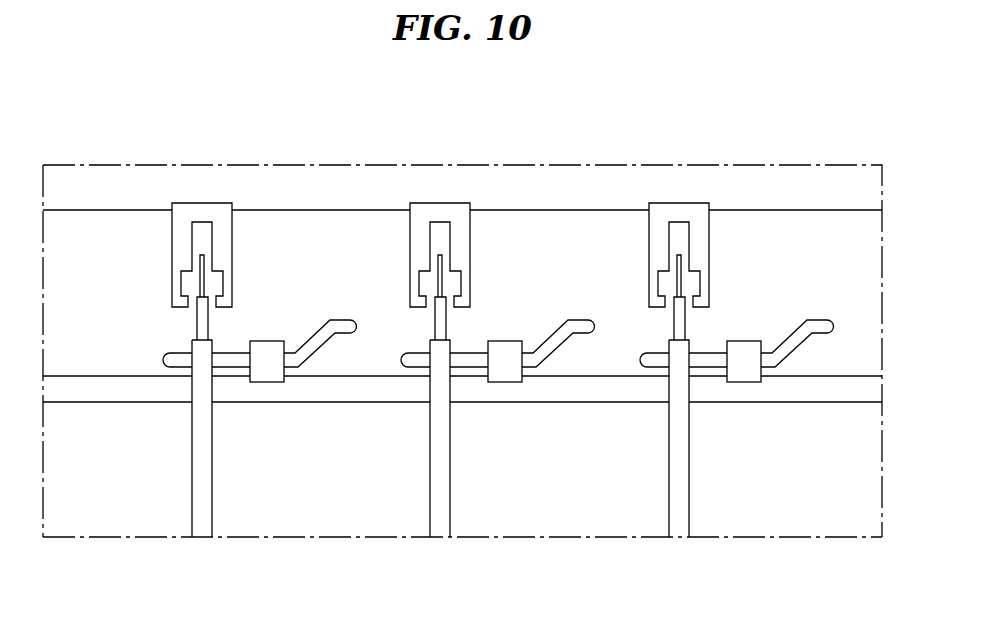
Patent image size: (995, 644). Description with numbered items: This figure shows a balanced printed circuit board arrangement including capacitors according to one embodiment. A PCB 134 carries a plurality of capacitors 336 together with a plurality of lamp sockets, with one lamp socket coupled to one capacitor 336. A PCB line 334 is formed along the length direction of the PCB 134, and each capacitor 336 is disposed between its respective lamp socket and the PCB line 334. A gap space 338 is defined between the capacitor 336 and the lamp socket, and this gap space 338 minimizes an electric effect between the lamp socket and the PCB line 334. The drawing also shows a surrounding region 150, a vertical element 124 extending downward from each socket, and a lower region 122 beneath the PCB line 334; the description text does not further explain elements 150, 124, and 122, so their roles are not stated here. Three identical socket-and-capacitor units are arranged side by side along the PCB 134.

The light source module housing region 150 is at (455, 173).
The PCB 134 is at (301, 230).
The guide rod 124 is at (202, 500).
The base substrate 122 is at (293, 513).
The PCB line 334 is at (557, 392).
The capacitor 336 is at (267, 382).
The gap space 338 is at (308, 353).